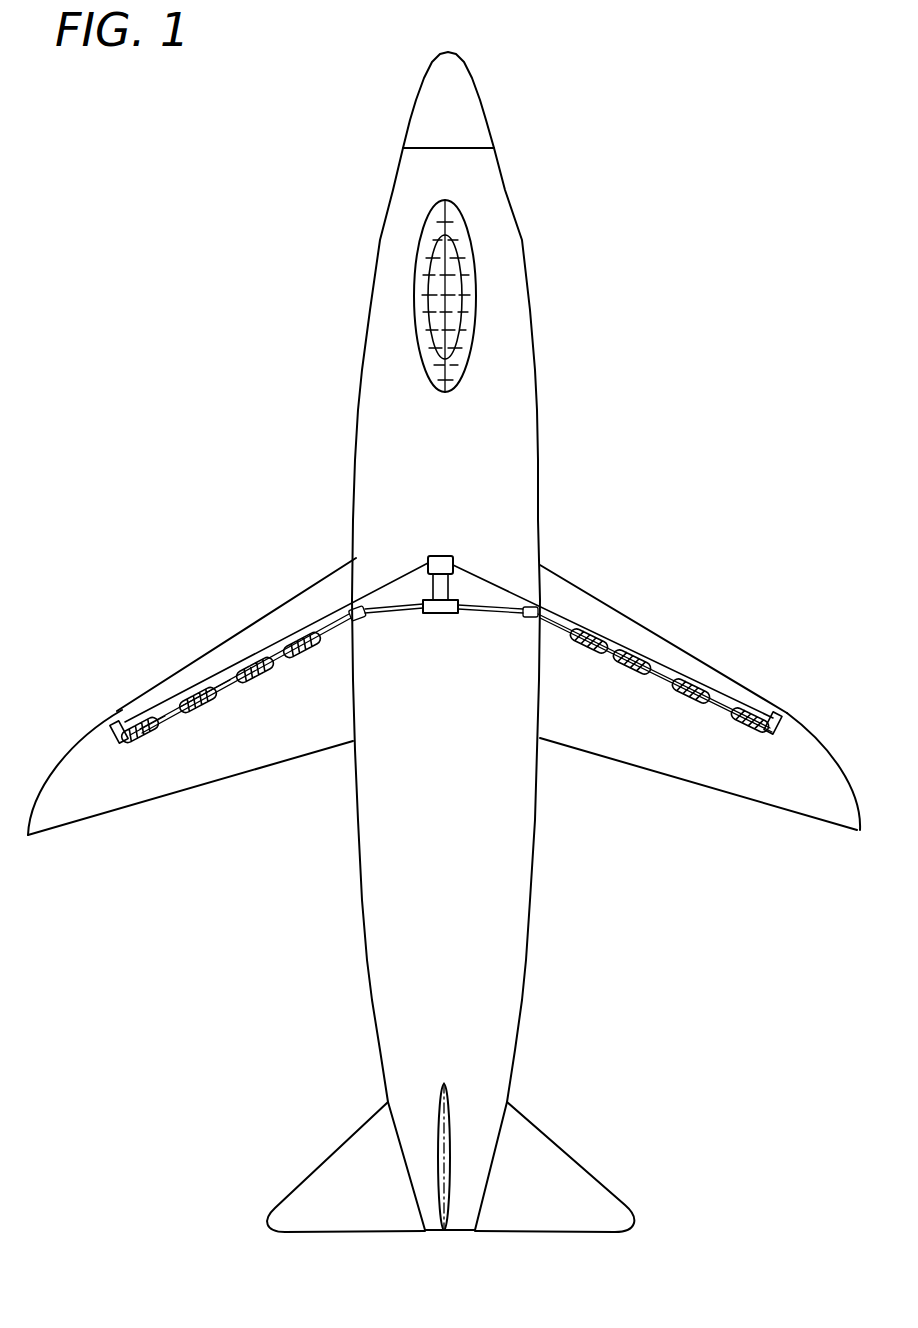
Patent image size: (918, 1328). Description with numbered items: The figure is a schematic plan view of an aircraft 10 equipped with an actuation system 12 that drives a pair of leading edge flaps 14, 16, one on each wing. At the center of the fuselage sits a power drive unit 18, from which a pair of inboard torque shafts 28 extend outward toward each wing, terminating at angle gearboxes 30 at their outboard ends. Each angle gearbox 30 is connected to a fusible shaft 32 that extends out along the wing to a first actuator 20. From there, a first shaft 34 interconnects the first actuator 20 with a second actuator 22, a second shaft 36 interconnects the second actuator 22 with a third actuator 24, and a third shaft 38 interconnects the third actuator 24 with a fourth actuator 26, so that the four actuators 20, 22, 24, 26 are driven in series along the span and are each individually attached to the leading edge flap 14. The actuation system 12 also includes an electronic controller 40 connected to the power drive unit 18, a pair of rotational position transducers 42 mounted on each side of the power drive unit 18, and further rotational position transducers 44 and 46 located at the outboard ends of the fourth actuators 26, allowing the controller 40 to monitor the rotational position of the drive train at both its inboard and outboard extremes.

The aircraft 10 is at (682, 138).
The actuation system 12 is at (421, 613).
The leading edge flap 14 is at (247, 628).
The leading edge flap 16 is at (653, 630).
The power drive unit 18 is at (461, 589).
The first actuator 20 is at (298, 630).
The second actuator 22 is at (248, 674).
The third actuator 24 is at (187, 697).
The fourth actuator 26 is at (130, 722).
The inboard torque shaft 28 is at (410, 600).
The angle gearbox 30 is at (363, 623).
The fusible shaft 32 is at (337, 627).
The first shaft 34 is at (277, 673).
The second shaft 36 is at (227, 690).
The third shaft 38 is at (183, 718).
The electronic controller 40 is at (441, 556).
The rotational position transducer 42 is at (444, 614).
The rotational position transducer 44 is at (765, 735).
The rotational position transducer 46 is at (128, 745).